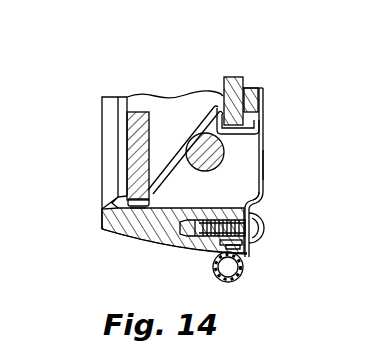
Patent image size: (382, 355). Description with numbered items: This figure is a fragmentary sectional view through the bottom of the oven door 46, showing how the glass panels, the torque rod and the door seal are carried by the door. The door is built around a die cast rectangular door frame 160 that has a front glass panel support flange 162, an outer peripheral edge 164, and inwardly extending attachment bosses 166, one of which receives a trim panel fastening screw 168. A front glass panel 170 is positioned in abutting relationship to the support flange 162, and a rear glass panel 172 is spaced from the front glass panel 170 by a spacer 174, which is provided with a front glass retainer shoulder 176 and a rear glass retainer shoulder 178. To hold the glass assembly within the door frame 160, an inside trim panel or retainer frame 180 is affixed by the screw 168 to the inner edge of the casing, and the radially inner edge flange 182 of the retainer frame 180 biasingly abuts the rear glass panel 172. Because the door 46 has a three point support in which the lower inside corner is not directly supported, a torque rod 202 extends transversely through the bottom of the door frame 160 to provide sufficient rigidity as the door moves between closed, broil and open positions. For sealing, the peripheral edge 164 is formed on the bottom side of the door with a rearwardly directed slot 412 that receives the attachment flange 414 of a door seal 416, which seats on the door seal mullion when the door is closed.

The oven door 46 is at (102, 155).
The door frame 160 is at (102, 230).
The front glass panel support flange 162 is at (117, 190).
The peripheral edge 164 is at (183, 254).
The attachment boss 166 is at (262, 198).
The screw 168 is at (262, 226).
The front glass panel 170 is at (134, 120).
The rear glass panel 172 is at (237, 80).
The spacer 174 is at (182, 146).
The front glass retainer shoulder 176 is at (134, 208).
The rear glass retainer shoulder 178 is at (264, 120).
The retainer frame 180 is at (265, 172).
The radially inner edge flange 182 is at (261, 88).
The torque rod 202 is at (212, 160).
The slot 412 is at (250, 243).
The attachment flange 414 is at (244, 259).
The door seal 416 is at (229, 282).